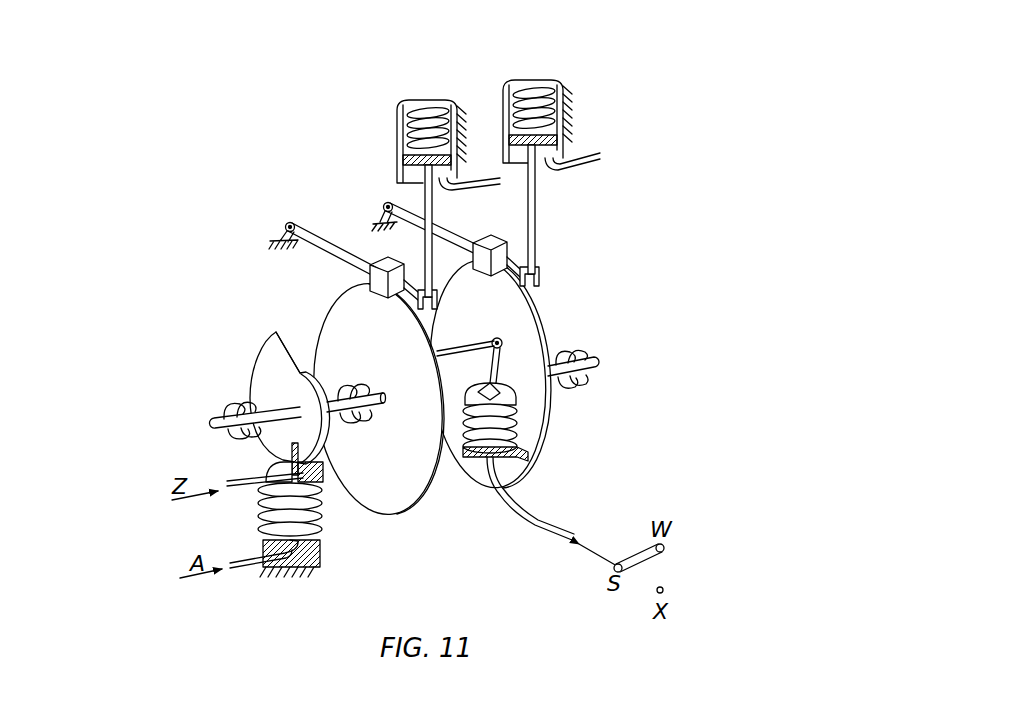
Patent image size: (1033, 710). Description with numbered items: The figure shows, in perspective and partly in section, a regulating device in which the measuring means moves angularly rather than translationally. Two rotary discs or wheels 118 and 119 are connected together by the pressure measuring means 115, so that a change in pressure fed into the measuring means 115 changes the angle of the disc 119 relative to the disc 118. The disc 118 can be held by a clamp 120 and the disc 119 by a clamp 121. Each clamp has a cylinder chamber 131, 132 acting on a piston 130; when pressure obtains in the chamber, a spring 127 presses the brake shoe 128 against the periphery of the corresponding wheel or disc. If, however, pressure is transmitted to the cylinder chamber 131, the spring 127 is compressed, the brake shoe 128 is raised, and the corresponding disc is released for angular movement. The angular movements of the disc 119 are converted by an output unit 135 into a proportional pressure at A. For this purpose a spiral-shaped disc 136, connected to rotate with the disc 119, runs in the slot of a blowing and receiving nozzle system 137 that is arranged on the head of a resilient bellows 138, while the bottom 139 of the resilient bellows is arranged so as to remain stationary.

The pressure measuring means 115 is at (531, 421).
The rotary disc 118 is at (494, 329).
The rotary disc 119 is at (382, 354).
The clamp 120 is at (554, 162).
The clamp 121 is at (399, 92).
The spring 127 is at (547, 104).
The brake shoe 128 is at (494, 245).
The piston 130 is at (550, 141).
The cylinder chamber 131 is at (562, 162).
The cylinder chamber 132 is at (540, 87).
The output unit 135 is at (196, 411).
The spiral-shaped disc 136 is at (260, 360).
The blowing and receiving nozzle system 137 is at (277, 467).
The resilient bellows 138 is at (252, 520).
The bottom of the resilient bellows 139 is at (320, 556).